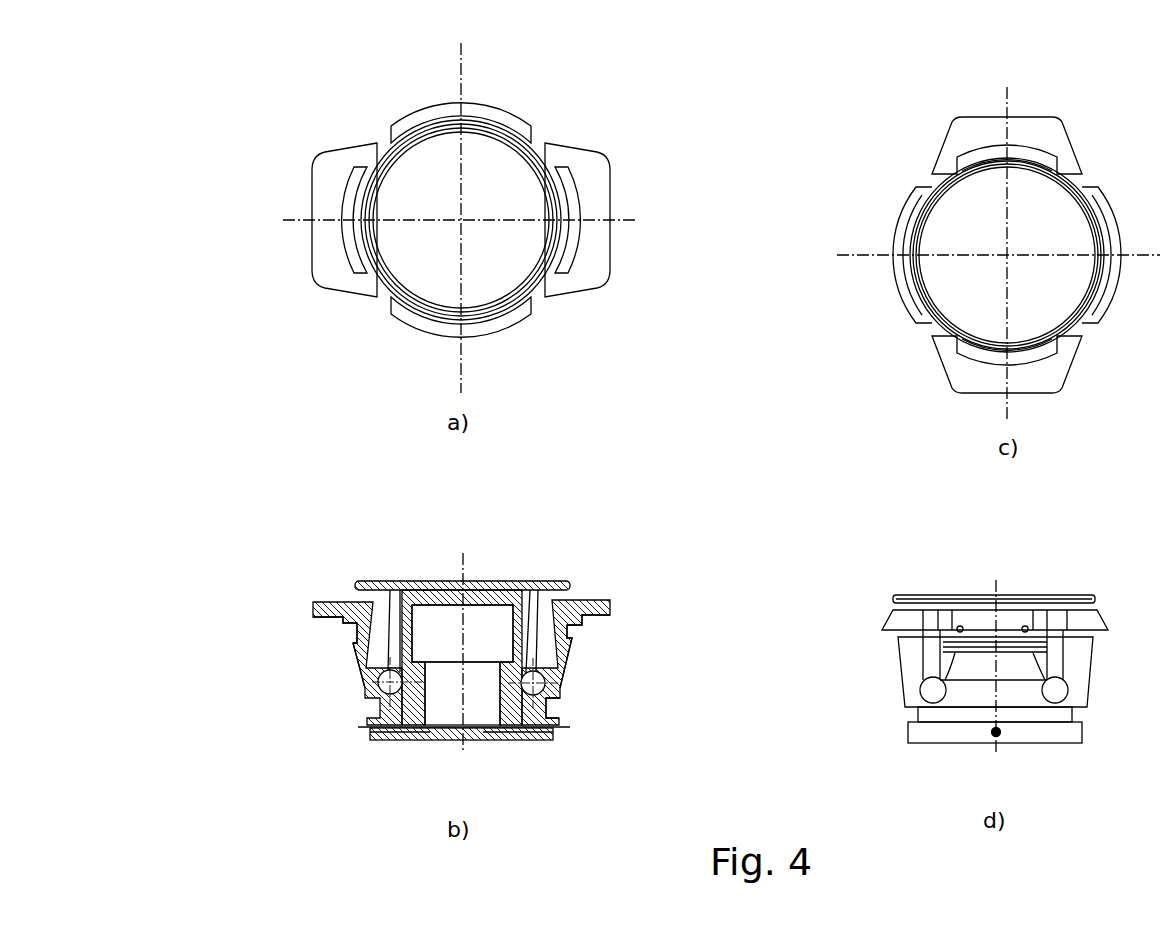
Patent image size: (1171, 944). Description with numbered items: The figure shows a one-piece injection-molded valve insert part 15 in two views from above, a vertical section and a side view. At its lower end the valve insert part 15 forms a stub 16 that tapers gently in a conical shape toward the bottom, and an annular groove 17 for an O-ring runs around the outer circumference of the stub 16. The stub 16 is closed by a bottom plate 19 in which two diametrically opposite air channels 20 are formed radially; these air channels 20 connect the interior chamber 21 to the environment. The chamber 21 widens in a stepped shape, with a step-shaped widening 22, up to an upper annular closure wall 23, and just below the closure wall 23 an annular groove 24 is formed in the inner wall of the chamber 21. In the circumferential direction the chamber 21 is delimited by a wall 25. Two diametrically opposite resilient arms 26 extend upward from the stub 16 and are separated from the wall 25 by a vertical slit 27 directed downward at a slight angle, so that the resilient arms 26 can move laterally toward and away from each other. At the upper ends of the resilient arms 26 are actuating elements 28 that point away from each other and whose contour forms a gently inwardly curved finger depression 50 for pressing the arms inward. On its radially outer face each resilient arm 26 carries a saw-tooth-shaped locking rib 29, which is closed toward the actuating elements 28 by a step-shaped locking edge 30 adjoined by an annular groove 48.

The valve insert part 15 is at (737, 625).
The stub 16 is at (575, 694).
The annular groove 17 is at (552, 712).
The bottom plate 19 is at (470, 742).
The air channels 20 is at (538, 740).
The chamber 21 is at (457, 691).
The step-shaped widening 22 is at (457, 638).
The annular closure wall 23 is at (537, 580).
The annular groove 24 is at (508, 583).
The wall 25 is at (378, 678).
The resilient arms 26 is at (360, 656).
The vertical slit 27 is at (570, 627).
The actuating elements 28 is at (578, 165).
The locking rib 29 is at (570, 643).
The locking edge 30 is at (353, 642).
The annular groove 48 is at (353, 625).
The finger depression 50 is at (607, 193).